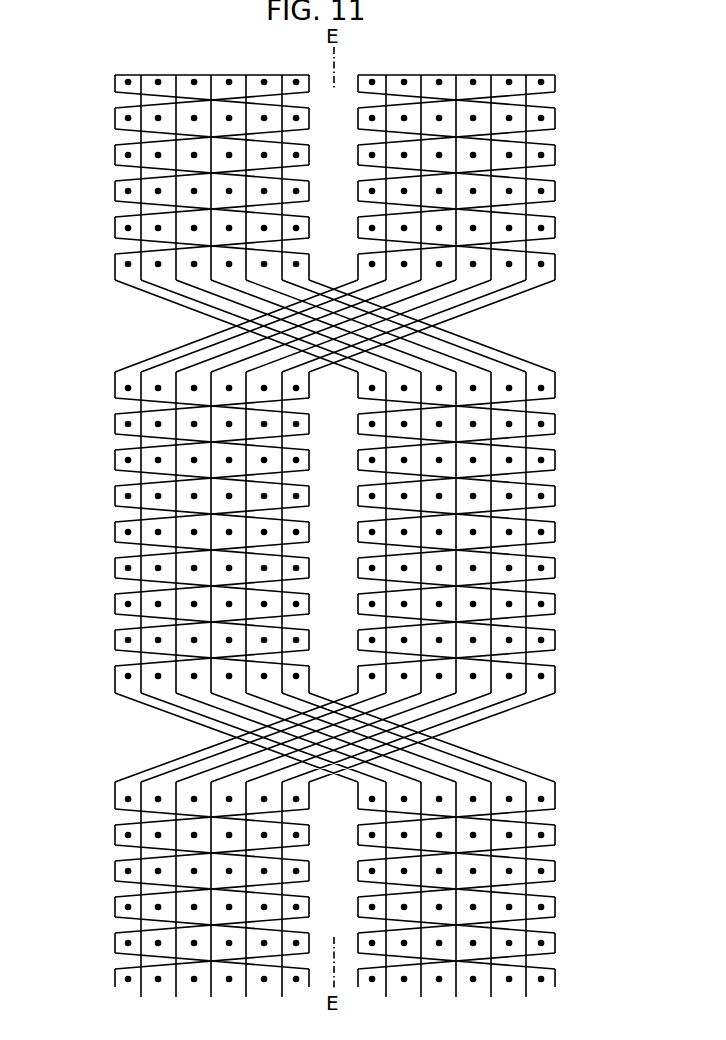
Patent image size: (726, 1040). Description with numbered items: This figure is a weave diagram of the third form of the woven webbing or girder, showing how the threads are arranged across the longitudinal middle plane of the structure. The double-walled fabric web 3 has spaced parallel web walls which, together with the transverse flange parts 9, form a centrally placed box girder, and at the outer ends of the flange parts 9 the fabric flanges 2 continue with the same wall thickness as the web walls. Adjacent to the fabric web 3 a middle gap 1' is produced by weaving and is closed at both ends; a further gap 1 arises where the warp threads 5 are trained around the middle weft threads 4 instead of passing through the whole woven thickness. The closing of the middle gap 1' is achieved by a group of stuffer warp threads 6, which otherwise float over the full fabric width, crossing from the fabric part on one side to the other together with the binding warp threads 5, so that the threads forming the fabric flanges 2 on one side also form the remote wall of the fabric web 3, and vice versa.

The gap 1 is at (198, 531).
The middle gap 1' is at (476, 532).
The fabric flanges 2 is at (105, 195).
The fabric web 3 is at (105, 502).
The weft threads 4 is at (542, 120).
The warp threads 5 is at (552, 130).
The stuffer warp threads 6 is at (525, 957).
The flange parts 9 is at (515, 321).